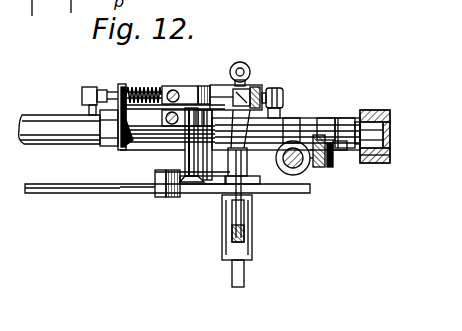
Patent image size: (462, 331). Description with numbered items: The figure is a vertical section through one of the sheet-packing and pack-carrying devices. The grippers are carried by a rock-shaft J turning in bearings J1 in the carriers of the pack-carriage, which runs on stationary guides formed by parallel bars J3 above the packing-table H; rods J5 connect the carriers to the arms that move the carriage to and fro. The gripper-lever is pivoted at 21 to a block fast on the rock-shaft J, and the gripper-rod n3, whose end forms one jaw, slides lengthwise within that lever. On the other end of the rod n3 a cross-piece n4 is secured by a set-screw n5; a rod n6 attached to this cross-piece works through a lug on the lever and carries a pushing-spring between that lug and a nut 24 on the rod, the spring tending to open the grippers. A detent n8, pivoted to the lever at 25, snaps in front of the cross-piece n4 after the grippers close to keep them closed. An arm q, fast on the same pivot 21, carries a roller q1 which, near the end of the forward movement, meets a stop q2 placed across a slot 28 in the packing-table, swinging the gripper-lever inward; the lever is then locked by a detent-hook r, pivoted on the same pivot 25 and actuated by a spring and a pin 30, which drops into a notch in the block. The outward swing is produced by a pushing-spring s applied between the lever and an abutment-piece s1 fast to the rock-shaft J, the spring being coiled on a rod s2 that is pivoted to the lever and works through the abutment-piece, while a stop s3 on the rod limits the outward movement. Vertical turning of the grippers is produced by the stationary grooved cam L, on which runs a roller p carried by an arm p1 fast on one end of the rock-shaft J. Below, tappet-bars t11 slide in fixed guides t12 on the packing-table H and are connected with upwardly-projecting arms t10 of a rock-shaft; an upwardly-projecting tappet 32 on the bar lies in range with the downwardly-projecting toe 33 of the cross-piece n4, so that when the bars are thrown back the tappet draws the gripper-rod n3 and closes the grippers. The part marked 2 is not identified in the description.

The rock-shaft J is at (33, 124).
The rod s2 is at (83, 95).
The abutment-piece s1 is at (121, 118).
The stop s3 is at (95, 101).
The pushing-spring s is at (130, 88).
The spring 2 is at (136, 79).
The detent n8 is at (192, 98).
The pin 30 is at (131, 108).
The arm q is at (163, 107).
The pivot 25 is at (203, 190).
The gripper-rod n3 is at (228, 87).
The rod n6 is at (248, 66).
The nut 24 is at (241, 62).
The cross-piece n4 is at (270, 88).
The toe 33 is at (275, 96).
The set-screw n5 is at (274, 109).
The detent-hook r is at (294, 127).
The arm p1 is at (341, 128).
The stationary grooved cam L is at (391, 118).
The roller p is at (392, 142).
The bearings J1 is at (336, 150).
The parallel bars J3 is at (293, 175).
The rods J5 is at (330, 172).
The tappet 32 is at (241, 150).
The packing-table H is at (55, 191).
The stop q2 is at (128, 181).
The roller q1 is at (163, 188).
The slot 28 is at (183, 190).
The pivot 21 is at (213, 195).
The fixed guides t12 is at (240, 184).
The tappet-bars t11 is at (252, 203).
The upwardly-projecting arms t10 is at (236, 270).